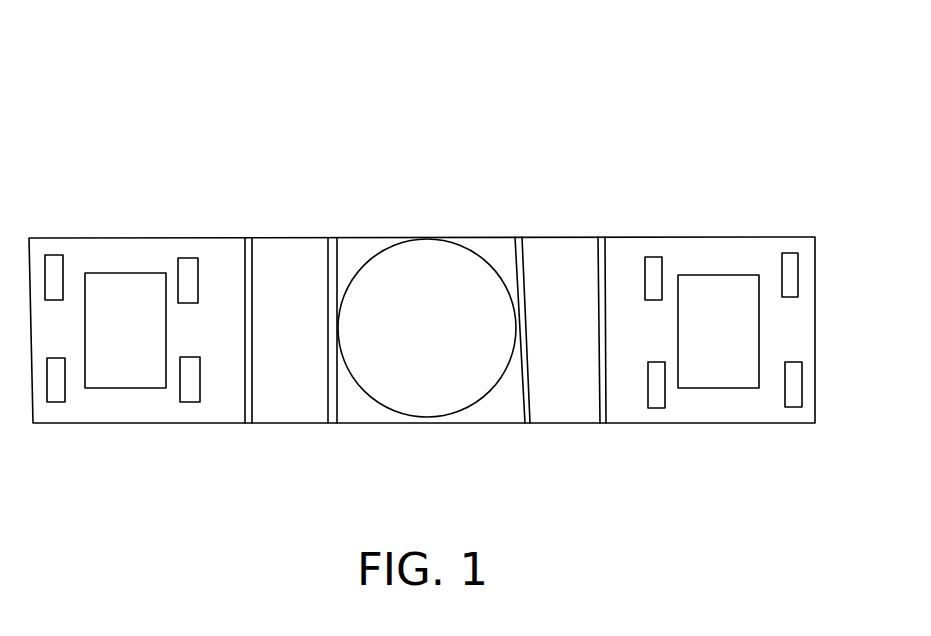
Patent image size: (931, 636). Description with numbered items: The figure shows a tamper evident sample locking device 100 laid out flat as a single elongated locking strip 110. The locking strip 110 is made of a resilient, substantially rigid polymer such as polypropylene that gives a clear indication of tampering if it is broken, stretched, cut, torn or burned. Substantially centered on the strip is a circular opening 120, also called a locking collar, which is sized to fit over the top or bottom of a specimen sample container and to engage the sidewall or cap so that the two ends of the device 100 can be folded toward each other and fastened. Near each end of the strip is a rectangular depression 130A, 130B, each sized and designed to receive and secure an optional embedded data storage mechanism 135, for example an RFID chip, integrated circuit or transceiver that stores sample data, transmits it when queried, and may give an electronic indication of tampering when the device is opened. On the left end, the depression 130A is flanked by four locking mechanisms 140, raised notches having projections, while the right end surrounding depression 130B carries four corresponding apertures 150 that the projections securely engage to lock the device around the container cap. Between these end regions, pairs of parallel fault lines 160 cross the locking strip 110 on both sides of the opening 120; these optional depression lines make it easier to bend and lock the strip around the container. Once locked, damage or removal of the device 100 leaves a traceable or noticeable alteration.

The sample locking device 100 is at (173, 138).
The locking strip 110 is at (288, 237).
The opening 120 is at (423, 268).
The depression 130A is at (110, 273).
The depression 130B is at (727, 273).
The embedded data storage mechanism 135 is at (127, 302).
The locking mechanisms 140 is at (63, 300).
The apertures 150 is at (662, 300).
The fault lines 160 is at (248, 423).